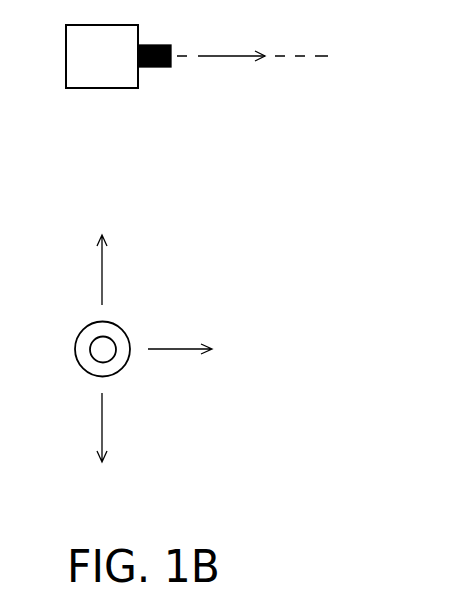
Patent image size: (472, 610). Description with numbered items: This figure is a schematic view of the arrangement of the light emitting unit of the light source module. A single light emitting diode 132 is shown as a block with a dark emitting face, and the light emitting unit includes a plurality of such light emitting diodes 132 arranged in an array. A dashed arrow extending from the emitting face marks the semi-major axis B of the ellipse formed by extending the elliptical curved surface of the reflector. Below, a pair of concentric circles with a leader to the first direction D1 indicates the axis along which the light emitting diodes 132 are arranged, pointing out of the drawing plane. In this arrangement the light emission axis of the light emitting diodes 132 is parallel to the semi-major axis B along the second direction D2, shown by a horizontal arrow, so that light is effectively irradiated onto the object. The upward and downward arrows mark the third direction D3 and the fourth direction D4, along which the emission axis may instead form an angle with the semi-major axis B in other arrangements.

The light emitting diode 132 is at (160, 67).
The semi-major axis B is at (273, 58).
The first direction D1 is at (108, 359).
The second direction D2 is at (199, 352).
The third direction D3 is at (100, 251).
The fourth direction D4 is at (100, 449).